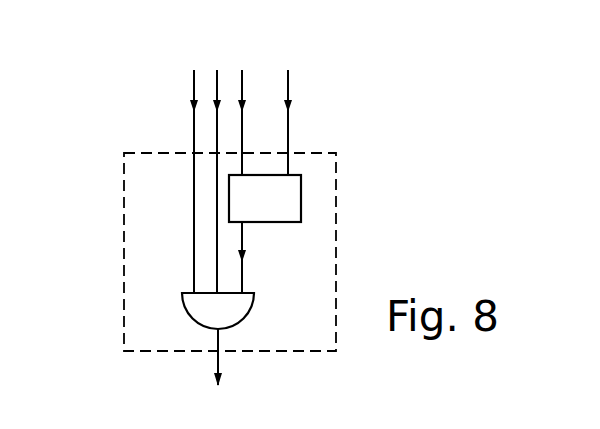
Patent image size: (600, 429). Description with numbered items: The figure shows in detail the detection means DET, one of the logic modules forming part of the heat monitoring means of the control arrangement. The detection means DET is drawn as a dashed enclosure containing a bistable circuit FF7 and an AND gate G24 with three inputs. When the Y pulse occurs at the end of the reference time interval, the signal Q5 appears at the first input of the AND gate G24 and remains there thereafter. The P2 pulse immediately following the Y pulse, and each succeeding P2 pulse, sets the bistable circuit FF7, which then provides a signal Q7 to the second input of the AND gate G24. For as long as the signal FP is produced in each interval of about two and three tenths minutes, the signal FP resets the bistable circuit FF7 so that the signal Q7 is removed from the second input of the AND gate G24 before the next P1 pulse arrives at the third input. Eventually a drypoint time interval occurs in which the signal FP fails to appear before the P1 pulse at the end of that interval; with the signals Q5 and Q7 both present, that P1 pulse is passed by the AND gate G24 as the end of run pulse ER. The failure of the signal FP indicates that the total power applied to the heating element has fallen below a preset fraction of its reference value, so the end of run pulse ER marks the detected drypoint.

The detection means DET is at (122, 197).
The P1 pulse P1 is at (217, 82).
The P2 pulse P2 is at (243, 77).
The signal Q5 is at (173, 181).
The signal FP is at (303, 122).
The bistable circuit FF7 is at (265, 198).
The signal Q7 is at (260, 257).
The AND gate G24 is at (239, 313).
The end of run pulse ER is at (234, 369).